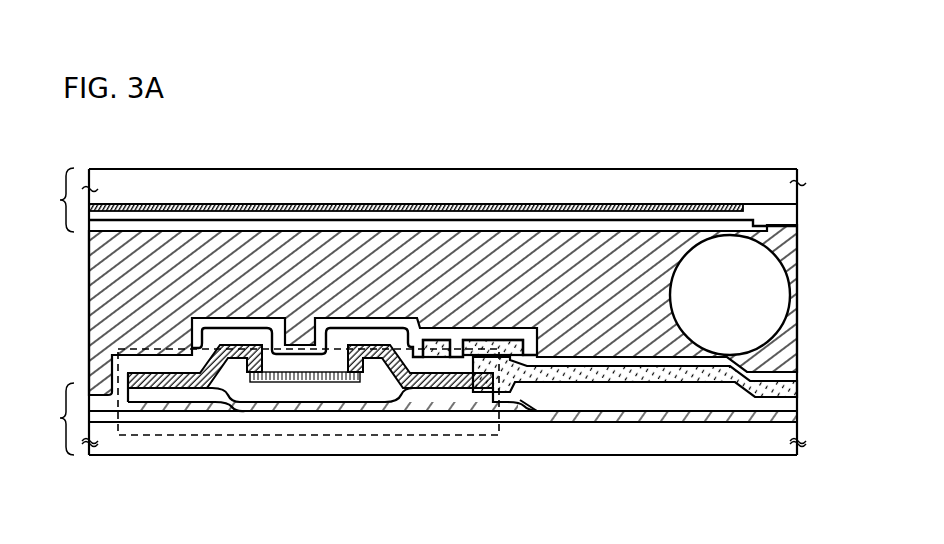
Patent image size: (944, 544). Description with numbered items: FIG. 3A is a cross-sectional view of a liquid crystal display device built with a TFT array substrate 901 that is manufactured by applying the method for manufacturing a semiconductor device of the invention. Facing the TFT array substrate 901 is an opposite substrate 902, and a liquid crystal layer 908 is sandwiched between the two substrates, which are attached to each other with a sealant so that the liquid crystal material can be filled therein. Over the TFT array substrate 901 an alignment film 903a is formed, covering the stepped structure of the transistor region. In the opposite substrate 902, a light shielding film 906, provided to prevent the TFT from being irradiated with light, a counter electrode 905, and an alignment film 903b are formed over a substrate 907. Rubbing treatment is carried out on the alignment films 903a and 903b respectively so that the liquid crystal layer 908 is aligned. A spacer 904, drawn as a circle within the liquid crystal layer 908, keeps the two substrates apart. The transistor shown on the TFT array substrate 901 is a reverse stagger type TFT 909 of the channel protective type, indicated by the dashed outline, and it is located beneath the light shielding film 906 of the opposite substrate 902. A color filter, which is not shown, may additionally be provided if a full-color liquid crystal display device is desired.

The TFT array substrate 901 is at (407, 419).
The opposite substrate 902 is at (407, 200).
The alignment film 903a is at (797, 378).
The alignment film 903b is at (797, 224).
The spacer 904 is at (785, 297).
The counter electrode 905 is at (797, 204).
The light shielding film 906 is at (228, 204).
The substrate 907 is at (360, 171).
The liquid crystal layer 908 is at (103, 305).
The reverse stagger type TFT 909 is at (443, 436).